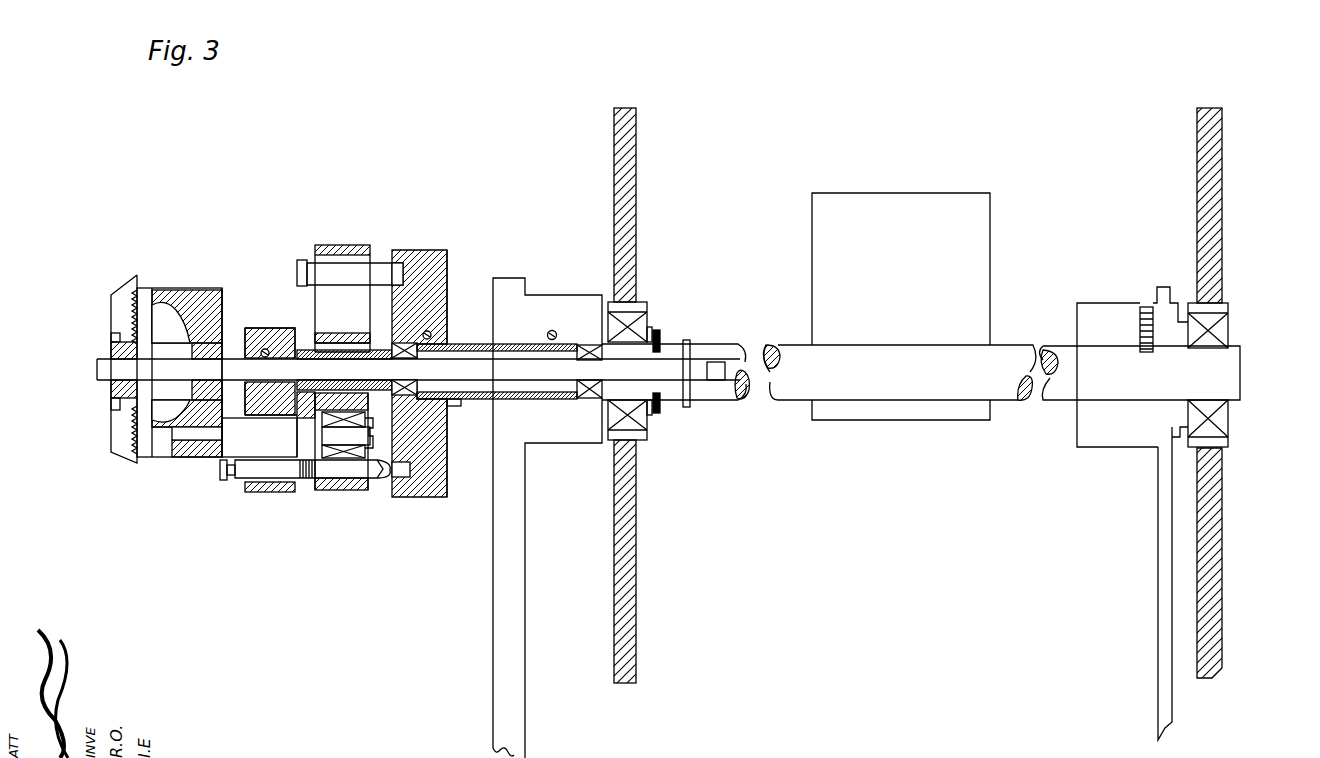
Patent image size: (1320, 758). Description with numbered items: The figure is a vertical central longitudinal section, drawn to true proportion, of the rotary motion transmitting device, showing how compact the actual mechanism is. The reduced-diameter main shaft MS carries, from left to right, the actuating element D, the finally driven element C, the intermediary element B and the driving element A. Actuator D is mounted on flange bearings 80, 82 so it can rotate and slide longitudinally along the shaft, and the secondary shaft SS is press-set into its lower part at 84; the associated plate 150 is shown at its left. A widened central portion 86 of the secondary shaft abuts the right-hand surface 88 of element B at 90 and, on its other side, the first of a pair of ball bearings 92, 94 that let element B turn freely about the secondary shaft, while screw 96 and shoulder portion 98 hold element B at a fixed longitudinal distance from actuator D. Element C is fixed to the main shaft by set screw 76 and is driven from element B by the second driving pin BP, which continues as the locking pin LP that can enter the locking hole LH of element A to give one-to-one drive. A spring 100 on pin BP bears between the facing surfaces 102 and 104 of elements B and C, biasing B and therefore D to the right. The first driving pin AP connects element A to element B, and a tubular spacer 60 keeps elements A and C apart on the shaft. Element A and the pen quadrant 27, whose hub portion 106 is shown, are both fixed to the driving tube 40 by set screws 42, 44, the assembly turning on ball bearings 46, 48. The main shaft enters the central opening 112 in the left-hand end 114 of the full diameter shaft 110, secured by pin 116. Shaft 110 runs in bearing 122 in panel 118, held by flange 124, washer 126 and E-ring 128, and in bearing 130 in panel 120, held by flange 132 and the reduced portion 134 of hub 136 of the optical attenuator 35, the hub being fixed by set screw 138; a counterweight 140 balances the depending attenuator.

The main shaft MS is at (97, 372).
The toothed plate 150 is at (117, 292).
The flange bearing 80 is at (113, 343).
The actuating element D is at (182, 288).
The right-hand surface of element B 88 is at (228, 345).
The secondary shaft SS is at (203, 446).
The press-set attachment 84 is at (175, 442).
The flange bearing 82 is at (240, 330).
The set screw 76 is at (266, 328).
The finally driven element C is at (258, 328).
The widened central portion of secondary shaft 86 is at (247, 450).
The abutment 90 is at (225, 462).
The facing surface of element C 104 is at (253, 448).
The second driving pin BP is at (290, 473).
The locking hole LH is at (383, 478).
The tubular spacer 60 is at (310, 350).
The ball bearing 92 is at (338, 462).
The facing surface of element B 102 is at (328, 462).
The ball bearing 94 is at (350, 462).
The spring 100 is at (320, 488).
The locking pin LP is at (373, 446).
The intermediary element B is at (352, 245).
The first driving pin AP is at (333, 268).
The driving element A is at (400, 250).
The ball bearing 46 is at (428, 330).
The set screw 42 is at (449, 300).
The driving tube 40 is at (458, 344).
The shoulder portion 98 is at (425, 407).
The screw 96 is at (455, 406).
The hub portion 106 is at (565, 295).
The pen quadrant 27 is at (526, 510).
The set screw 44 is at (550, 330).
The ball bearing 48 is at (590, 345).
The flange 124 is at (646, 302).
The fixed panel 118 is at (637, 527).
The bearing 122 is at (644, 322).
The washer 126 is at (650, 420).
The E-ring 128 is at (661, 406).
The left-hand end of full diameter shaft 114 is at (669, 352).
The pin 116 is at (690, 342).
The longitudinal central opening 112 is at (717, 381).
The full diameter main shaft 110 is at (1001, 346).
The counterweight 140 is at (932, 193).
The hub of attenuator 136 is at (1093, 303).
The set screw 138 is at (1147, 307).
The flange 132 is at (1190, 300).
The reduced diameter right-hand portion of hub 134 is at (1176, 336).
The bearing 130 is at (1222, 424).
The fixed panel 120 is at (1222, 492).
The optical attenuator 35 is at (1157, 530).